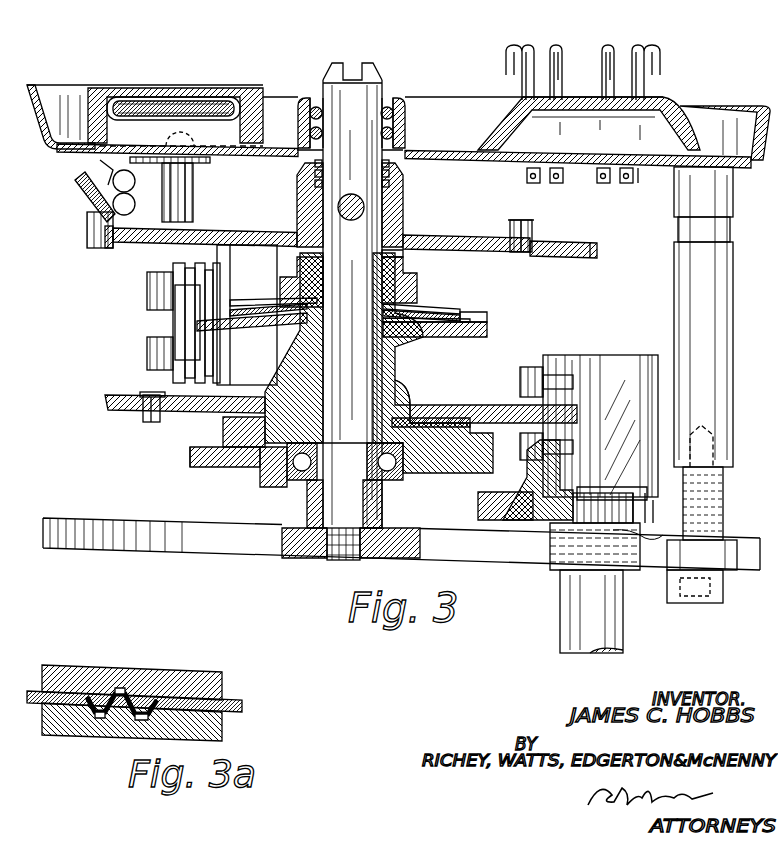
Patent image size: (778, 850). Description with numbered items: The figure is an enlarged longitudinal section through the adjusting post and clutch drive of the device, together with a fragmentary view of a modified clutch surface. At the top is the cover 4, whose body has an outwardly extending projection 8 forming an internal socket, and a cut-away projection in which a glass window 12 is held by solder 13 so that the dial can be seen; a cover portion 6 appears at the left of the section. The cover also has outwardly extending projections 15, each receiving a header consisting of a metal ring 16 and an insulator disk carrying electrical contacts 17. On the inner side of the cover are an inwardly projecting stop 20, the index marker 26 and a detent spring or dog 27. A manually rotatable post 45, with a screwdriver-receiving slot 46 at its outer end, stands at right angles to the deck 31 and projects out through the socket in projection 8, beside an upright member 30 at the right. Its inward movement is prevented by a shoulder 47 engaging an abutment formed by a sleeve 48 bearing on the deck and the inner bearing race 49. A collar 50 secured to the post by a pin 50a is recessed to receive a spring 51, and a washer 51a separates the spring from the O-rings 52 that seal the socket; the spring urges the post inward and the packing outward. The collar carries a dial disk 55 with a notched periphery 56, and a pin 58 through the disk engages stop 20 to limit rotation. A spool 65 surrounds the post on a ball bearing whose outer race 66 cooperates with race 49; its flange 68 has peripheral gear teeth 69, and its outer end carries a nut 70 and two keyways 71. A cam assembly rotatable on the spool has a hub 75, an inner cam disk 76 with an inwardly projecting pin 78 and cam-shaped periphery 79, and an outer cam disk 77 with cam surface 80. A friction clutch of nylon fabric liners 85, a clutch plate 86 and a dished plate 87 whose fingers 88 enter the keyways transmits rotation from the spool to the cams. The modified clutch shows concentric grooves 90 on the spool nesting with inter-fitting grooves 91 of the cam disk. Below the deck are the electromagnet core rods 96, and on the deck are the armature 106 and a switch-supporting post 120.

In FIG. 3, the cover 4 is at (262, 97).
In FIG. 3, the cover 6 is at (50, 105).
In FIG. 3, the outwardly extending projection 8 is at (304, 100).
In FIG. 3, the glass window 12 is at (145, 100).
In FIG. 3, the solder 13 is at (104, 126).
In FIG. 3, the outwardly extending projections 15 is at (695, 140).
In FIG. 3, the metal ring 16 is at (672, 135).
In FIG. 3, the electrical contacts 17 is at (638, 48).
In FIG. 3, the inwardly projecting stop 20 is at (190, 214).
In FIG. 3, the index marker 26 is at (85, 195).
In FIG. 3, the detent spring or dog 27 is at (95, 250).
In FIG. 3, the column 30 is at (705, 322).
In FIG. 3, the deck 31 is at (242, 548).
In FIG. 3, the manually rotatable post 45 is at (360, 510).
In FIG. 3, the screwdriver-receiving slot 46 is at (352, 76).
In FIG. 3, the shoulder 47 is at (318, 462).
In FIG. 3, the sleeve 48 is at (375, 545).
In FIG. 3, the inner bearing race 49 is at (383, 495).
In FIG. 3, the collar 50 is at (404, 203).
In FIG. 3, the pin 50a is at (338, 207).
In FIG. 3, the spring 51 is at (398, 185).
In FIG. 3, the washer 51a is at (400, 150).
In FIG. 3, the O-rings 52 is at (392, 108).
In FIG. 3, the dial disk 55 is at (500, 240).
In FIG. 3, the notched periphery 56 is at (598, 250).
In FIG. 3, the pin 58 is at (530, 232).
In FIG. 3, the spool 65 is at (388, 368).
In FIG. 3a, the spool 65 is at (212, 730).
In FIG. 3, the outer race 66 is at (272, 487).
In FIG. 3, the flange 68 is at (200, 470).
In FIG. 3, the peripheral gear teeth 69 is at (188, 462).
In FIG. 3, the nut 70 is at (418, 283).
In FIG. 3, the keyways 71 is at (404, 258).
In FIG. 3, the hub 75 is at (410, 395).
In FIG. 3, the inner cam disk 76 is at (440, 408).
In FIG. 3a, the inner cam disk 76 is at (192, 670).
In FIG. 3, the outer cam disk 77 is at (472, 317).
In FIG. 3, the inwardly projecting pin 78 is at (145, 418).
In FIG. 3, the cam-shaped periphery 79 is at (105, 404).
In FIG. 3, the cam surface 80 is at (492, 331).
In FIG. 3, the fabric liners 85 is at (492, 320).
In FIG. 3a, the fabric liners 85 is at (242, 700).
In FIG. 3, the clutch plate 86 is at (440, 312).
In FIG. 3, the dished plate 87 is at (408, 308).
In FIG. 3, the fingers 88 is at (295, 280).
In FIG. 3a, the grooves 90 is at (128, 712).
In FIG. 3a, the inter-fitting grooves 91 is at (148, 693).
In FIG. 3, the rods 96 is at (598, 615).
In FIG. 3, the armature 106 is at (625, 502).
In FIG. 3, the post 120 is at (600, 368).